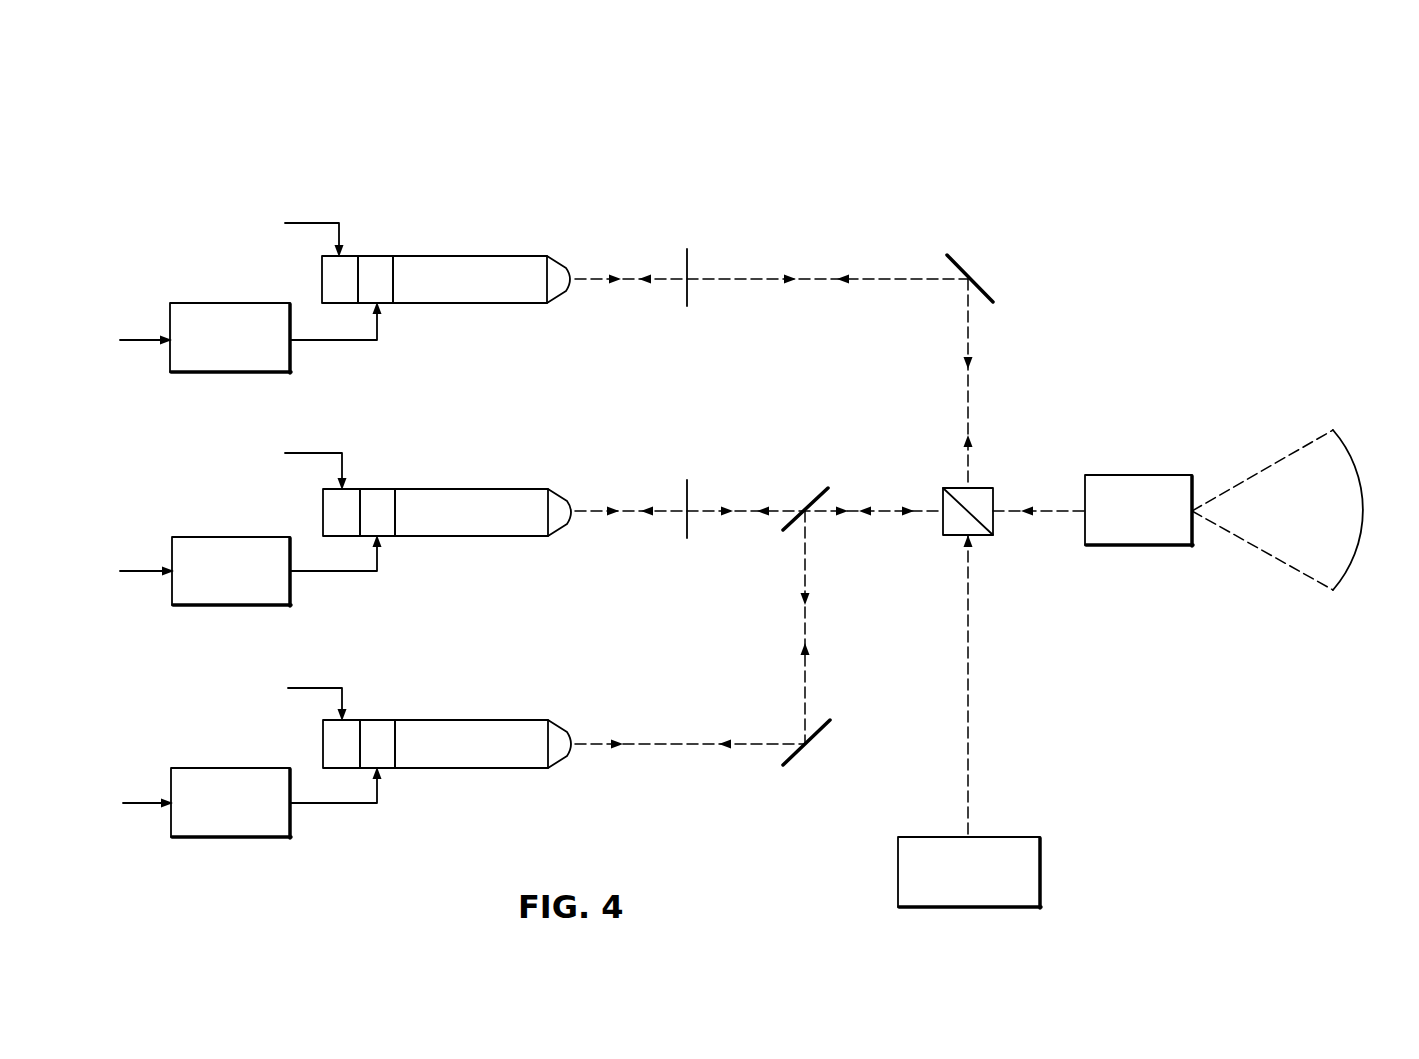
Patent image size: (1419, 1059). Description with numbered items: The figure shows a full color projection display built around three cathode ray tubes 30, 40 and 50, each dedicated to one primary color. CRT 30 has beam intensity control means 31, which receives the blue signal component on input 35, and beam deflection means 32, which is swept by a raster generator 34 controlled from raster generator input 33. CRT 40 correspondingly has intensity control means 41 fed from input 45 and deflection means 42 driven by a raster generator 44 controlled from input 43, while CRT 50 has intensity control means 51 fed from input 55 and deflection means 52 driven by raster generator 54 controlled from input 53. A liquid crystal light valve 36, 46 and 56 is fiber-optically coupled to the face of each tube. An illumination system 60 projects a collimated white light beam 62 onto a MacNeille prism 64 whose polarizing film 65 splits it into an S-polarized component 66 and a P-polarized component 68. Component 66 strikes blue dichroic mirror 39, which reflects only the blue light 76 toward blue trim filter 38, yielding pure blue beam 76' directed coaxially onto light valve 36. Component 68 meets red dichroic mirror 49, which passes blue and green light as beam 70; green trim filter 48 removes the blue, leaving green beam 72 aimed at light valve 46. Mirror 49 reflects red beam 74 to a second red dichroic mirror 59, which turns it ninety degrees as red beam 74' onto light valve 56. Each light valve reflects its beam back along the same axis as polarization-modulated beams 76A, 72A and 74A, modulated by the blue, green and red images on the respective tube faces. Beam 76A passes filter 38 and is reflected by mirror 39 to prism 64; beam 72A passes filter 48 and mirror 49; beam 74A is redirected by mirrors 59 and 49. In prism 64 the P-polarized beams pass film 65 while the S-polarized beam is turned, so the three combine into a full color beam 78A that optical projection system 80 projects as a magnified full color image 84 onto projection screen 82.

The cathode ray tube 30 is at (433, 260).
The beam intensity control means 31 is at (330, 273).
The beam deflection means 32 is at (376, 268).
The raster generator input 33 is at (142, 340).
The raster generator 34 is at (215, 303).
The input 35 is at (320, 223).
The liquid crystal light valve 36 is at (560, 272).
The blue trim filter 38 is at (690, 258).
The blue dichroic mirror 39 is at (968, 268).
The cathode ray tube 40 is at (433, 491).
The beam intensity control means 41 is at (330, 506).
The beam deflection means 42 is at (376, 500).
The raster generator input 43 is at (136, 571).
The green raster generator 44 is at (212, 537).
The input 45 is at (320, 453).
The liquid crystal light valve 46 is at (560, 505).
The green trim filter 48 is at (690, 492).
The red dichroic mirror 49 is at (810, 495).
The cathode ray tube 50 is at (436, 722).
The beam intensity control means 51 is at (335, 738).
The beam deflection means 52 is at (376, 730).
The raster generator input 53 is at (141, 803).
The raster generator 54 is at (223, 768).
The input 55 is at (320, 688).
The liquid crystal light valve 56 is at (558, 738).
The second red dichroic mirror 59 is at (820, 735).
The illumination system 60 is at (1024, 875).
The collimated beam of white light 62 is at (975, 545).
The prism 64 is at (980, 497).
The polarizing film 65 is at (985, 518).
The S-polarized beam component 66 is at (963, 443).
The P-polarized beam component 68 is at (908, 520).
The beam 70 is at (768, 522).
The P-polarized green beam 72 is at (653, 522).
The reflected green beam 72A is at (610, 522).
The primary red beam 74 is at (828, 601).
The re-directed red beam 74' is at (712, 726).
The reflected red beam 74A is at (864, 505).
The primary blue component 76 is at (857, 304).
The filtered blue beam 76' is at (660, 304).
The reflected blue beam 76A is at (613, 290).
The full color beam 78A is at (1032, 505).
The optical projection system 80 is at (1160, 478).
The projection screen 82 is at (1350, 570).
The full color magnified image 84 is at (1237, 491).